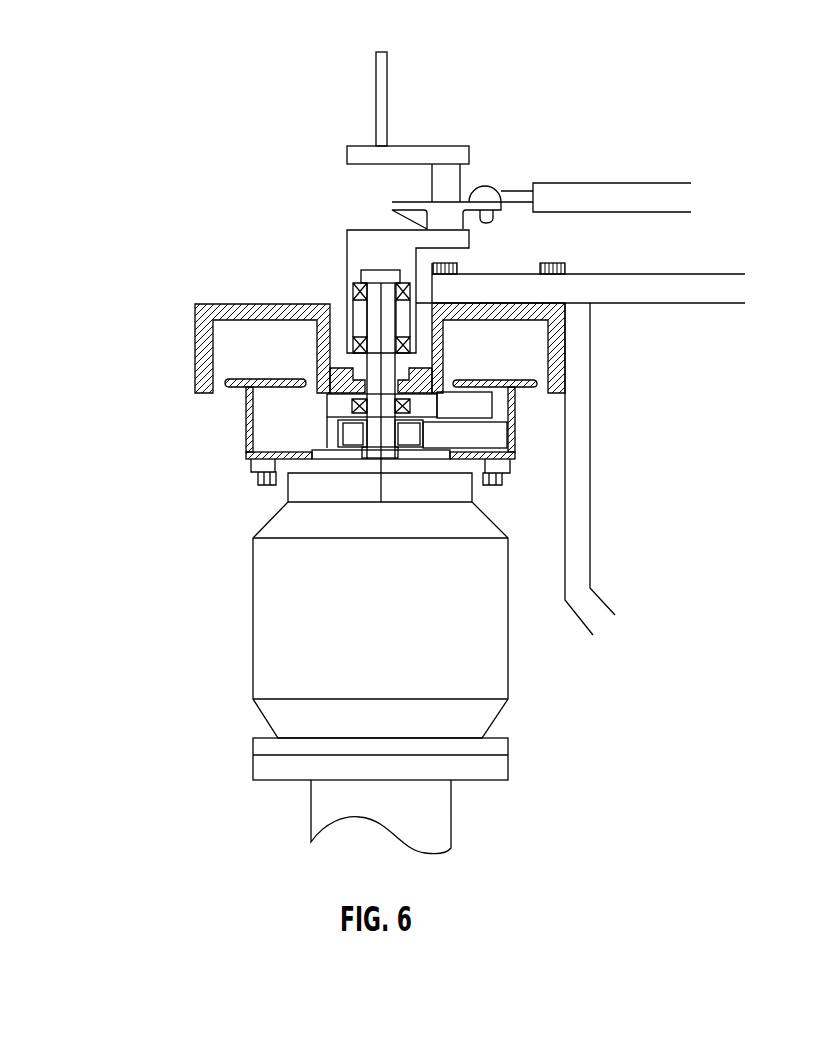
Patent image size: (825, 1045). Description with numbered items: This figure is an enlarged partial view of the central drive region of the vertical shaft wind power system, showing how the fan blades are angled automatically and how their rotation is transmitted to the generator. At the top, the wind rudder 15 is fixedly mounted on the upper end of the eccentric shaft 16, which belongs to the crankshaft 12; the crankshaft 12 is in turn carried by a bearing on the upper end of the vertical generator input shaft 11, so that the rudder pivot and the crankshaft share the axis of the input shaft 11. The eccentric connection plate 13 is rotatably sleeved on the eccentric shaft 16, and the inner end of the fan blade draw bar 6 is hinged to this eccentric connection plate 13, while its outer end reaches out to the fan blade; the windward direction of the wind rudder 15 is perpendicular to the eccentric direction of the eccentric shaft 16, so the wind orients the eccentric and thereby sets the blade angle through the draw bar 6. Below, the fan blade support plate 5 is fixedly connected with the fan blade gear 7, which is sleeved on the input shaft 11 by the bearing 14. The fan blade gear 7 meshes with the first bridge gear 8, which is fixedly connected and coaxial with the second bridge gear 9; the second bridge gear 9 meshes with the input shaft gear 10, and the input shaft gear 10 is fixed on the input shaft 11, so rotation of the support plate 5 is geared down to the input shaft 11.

The fan blade support plate 5 is at (195, 350).
The fan blade draw bar 6 is at (656, 198).
The fan blade gear 7 is at (337, 400).
The first bridge gear 8 is at (470, 400).
The second bridge gear 9 is at (470, 437).
The input shaft gear 10 is at (355, 437).
The vertical generator input shaft 11 is at (373, 312).
The crankshaft 12 is at (372, 250).
The eccentric connection plate 13 is at (442, 222).
The bearing 14 is at (355, 413).
The wind rudder 15 is at (381, 92).
The eccentric shaft 16 is at (443, 178).